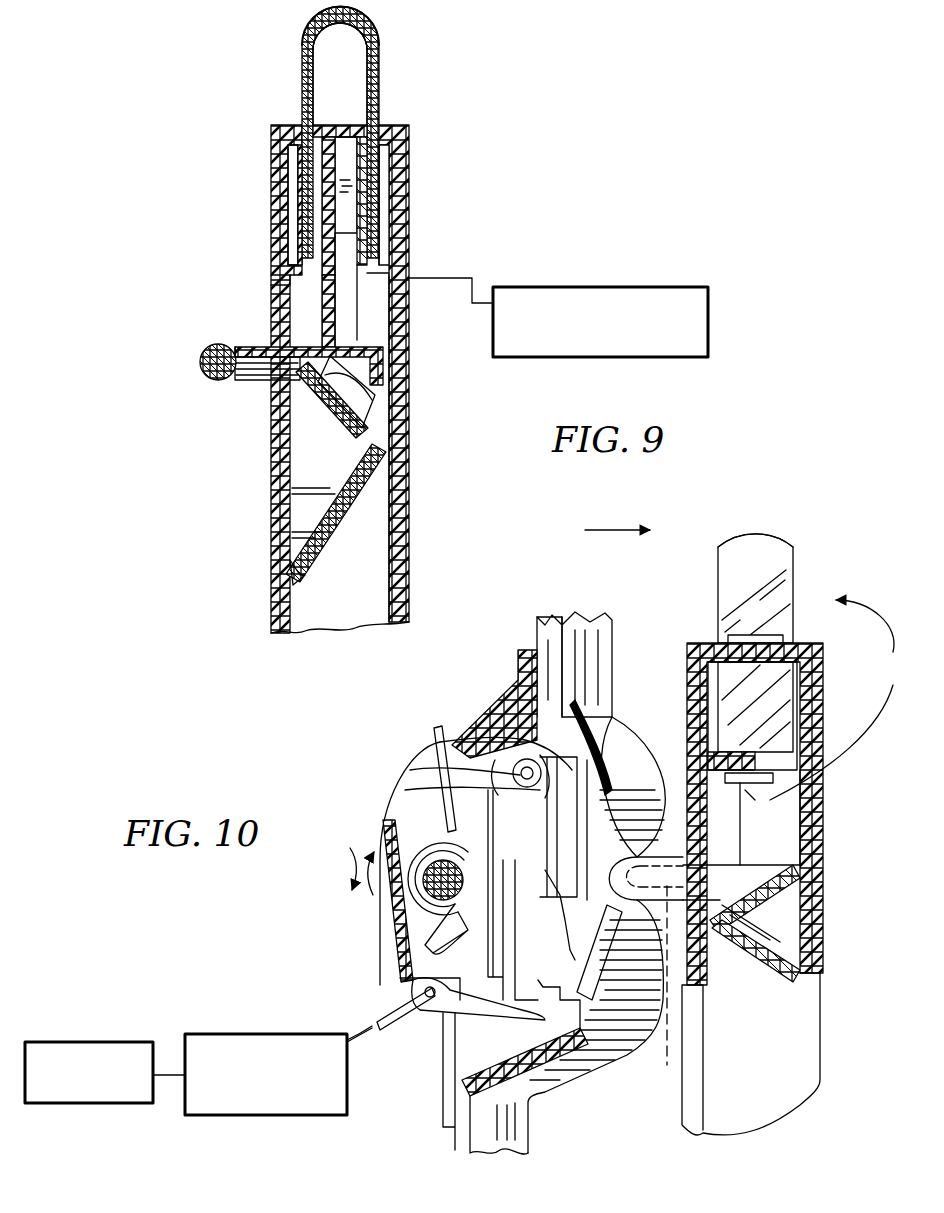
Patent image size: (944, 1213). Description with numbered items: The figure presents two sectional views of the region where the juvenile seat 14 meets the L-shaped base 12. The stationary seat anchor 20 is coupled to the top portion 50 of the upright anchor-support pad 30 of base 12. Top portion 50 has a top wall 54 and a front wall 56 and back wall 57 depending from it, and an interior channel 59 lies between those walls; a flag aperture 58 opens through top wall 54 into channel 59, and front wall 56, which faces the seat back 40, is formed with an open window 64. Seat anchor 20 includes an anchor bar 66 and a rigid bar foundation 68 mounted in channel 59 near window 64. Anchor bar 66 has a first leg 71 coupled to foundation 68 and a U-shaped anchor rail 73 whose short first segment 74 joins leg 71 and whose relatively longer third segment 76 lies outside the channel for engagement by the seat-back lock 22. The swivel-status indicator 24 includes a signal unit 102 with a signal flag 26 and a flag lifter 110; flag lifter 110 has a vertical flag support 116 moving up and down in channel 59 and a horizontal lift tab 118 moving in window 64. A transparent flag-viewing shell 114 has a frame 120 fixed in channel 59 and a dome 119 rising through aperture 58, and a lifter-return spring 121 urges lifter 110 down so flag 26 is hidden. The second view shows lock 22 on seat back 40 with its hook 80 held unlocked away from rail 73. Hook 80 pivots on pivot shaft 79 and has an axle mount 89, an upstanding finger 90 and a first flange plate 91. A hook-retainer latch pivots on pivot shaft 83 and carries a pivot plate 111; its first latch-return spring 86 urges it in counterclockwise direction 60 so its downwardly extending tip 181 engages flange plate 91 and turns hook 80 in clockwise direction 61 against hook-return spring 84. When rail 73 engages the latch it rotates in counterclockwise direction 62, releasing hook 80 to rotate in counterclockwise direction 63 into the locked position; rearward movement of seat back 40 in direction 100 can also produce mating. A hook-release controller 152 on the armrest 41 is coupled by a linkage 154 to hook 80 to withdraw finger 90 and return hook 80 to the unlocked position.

In FIG. 9, the base 12 is at (258, 144).
In FIG. 10, the juvenile seat 14 is at (521, 642).
In FIG. 9, the seat anchor 20 is at (206, 340).
In FIG. 10, the seat anchor 20 is at (612, 798).
In FIG. 10, the seat-back lock 22 is at (492, 1032).
In FIG. 9, the swivel-status indicator 24 is at (386, 96).
In FIG. 10, the swivel-status indicator 24 is at (805, 625).
In FIG. 9, the signal flag 26 is at (300, 192).
In FIG. 9, the anchor-support pad 30 is at (410, 556).
In FIG. 10, the seat back 40 is at (550, 608).
In FIG. 10, the armrest 41 is at (101, 1040).
In FIG. 9, the top portion 50 is at (430, 264).
In FIG. 9, the top wall 54 is at (392, 126).
In FIG. 10, the top wall 54 is at (818, 651).
In FIG. 9, the front wall 56 is at (278, 164).
In FIG. 10, the front wall 56 is at (696, 686).
In FIG. 9, the back wall 57 is at (405, 181).
In FIG. 10, the back wall 57 is at (802, 718).
In FIG. 9, the flag aperture 58 is at (364, 130).
In FIG. 9, the interior channel 59 is at (368, 545).
In FIG. 10, the counterclockwise direction 60 is at (430, 776).
In FIG. 10, the clockwise direction 61 is at (372, 896).
In FIG. 10, the counterclockwise direction 62 is at (440, 793).
In FIG. 10, the counterclockwise direction 63 is at (348, 866).
In FIG. 9, the open window 64 is at (276, 287).
In FIG. 9, the anchor bar 66 is at (224, 390).
In FIG. 10, the anchor bar 66 is at (768, 892).
In FIG. 9, the bar foundation 68 is at (318, 578).
In FIG. 10, the bar foundation 68 is at (752, 966).
In FIG. 9, the first leg 71 is at (352, 406).
In FIG. 10, the first leg 71 is at (772, 929).
In FIG. 9, the U-shaped anchor rail 73 is at (203, 376).
In FIG. 9, the first segment 74 is at (254, 380).
In FIG. 9, the third segment 76 is at (216, 346).
In FIG. 10, the pivot shaft 79 is at (432, 940).
In FIG. 10, the hook 80 is at (428, 1014).
In FIG. 10, the pivot shaft 83 is at (522, 782).
In FIG. 10, the hook-return spring 84 is at (430, 734).
In FIG. 10, the first latch-return spring 86 is at (468, 756).
In FIG. 10, the axle mount 89 is at (472, 1000).
In FIG. 10, the upstanding finger 90 is at (507, 950).
In FIG. 10, the first flange plate 91 is at (532, 1008).
In FIG. 10, the rearward direction 100 is at (617, 513).
In FIG. 9, the signal unit 102 is at (420, 55).
In FIG. 10, the signal unit 102 is at (841, 700).
In FIG. 9, the flag lifter 110 is at (350, 318).
In FIG. 10, the flag lifter 110 is at (784, 781).
In FIG. 10, the pivot plate 111 is at (545, 835).
In FIG. 9, the flag-viewing shell 114 is at (383, 27).
In FIG. 10, the flag-viewing shell 114 is at (790, 540).
In FIG. 9, the flag support 116 is at (337, 293).
In FIG. 10, the flag support 116 is at (756, 801).
In FIG. 9, the lift tab 118 is at (259, 348).
In FIG. 10, the lift tab 118 is at (646, 977).
In FIG. 9, the dome 119 is at (302, 32).
In FIG. 10, the dome 119 is at (752, 542).
In FIG. 9, the frame 120 is at (386, 162).
In FIG. 9, the lifter-return spring 121 is at (708, 325).
In FIG. 10, the hook-release controller 152 is at (230, 1032).
In FIG. 10, the linkage 154 is at (396, 1022).
In FIG. 10, the tip 181 is at (566, 962).